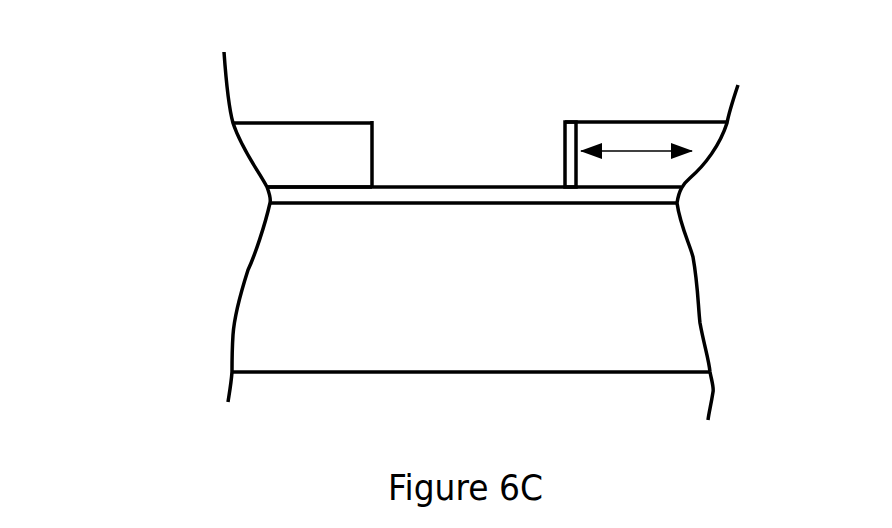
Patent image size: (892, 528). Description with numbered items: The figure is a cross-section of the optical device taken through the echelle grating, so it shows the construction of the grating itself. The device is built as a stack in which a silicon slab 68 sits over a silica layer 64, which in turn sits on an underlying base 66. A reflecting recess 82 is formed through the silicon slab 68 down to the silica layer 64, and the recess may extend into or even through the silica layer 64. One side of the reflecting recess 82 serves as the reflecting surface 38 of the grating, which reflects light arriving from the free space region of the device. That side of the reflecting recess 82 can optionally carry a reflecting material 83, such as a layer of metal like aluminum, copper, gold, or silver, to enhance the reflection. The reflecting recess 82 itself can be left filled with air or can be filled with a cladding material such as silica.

The reflecting surface 38 is at (577, 172).
The silica layer 64 is at (281, 193).
The substrate 66 is at (255, 308).
The silicon slab 68 is at (262, 152).
The reflecting recess 82 is at (372, 157).
The reflecting material 83 is at (563, 158).